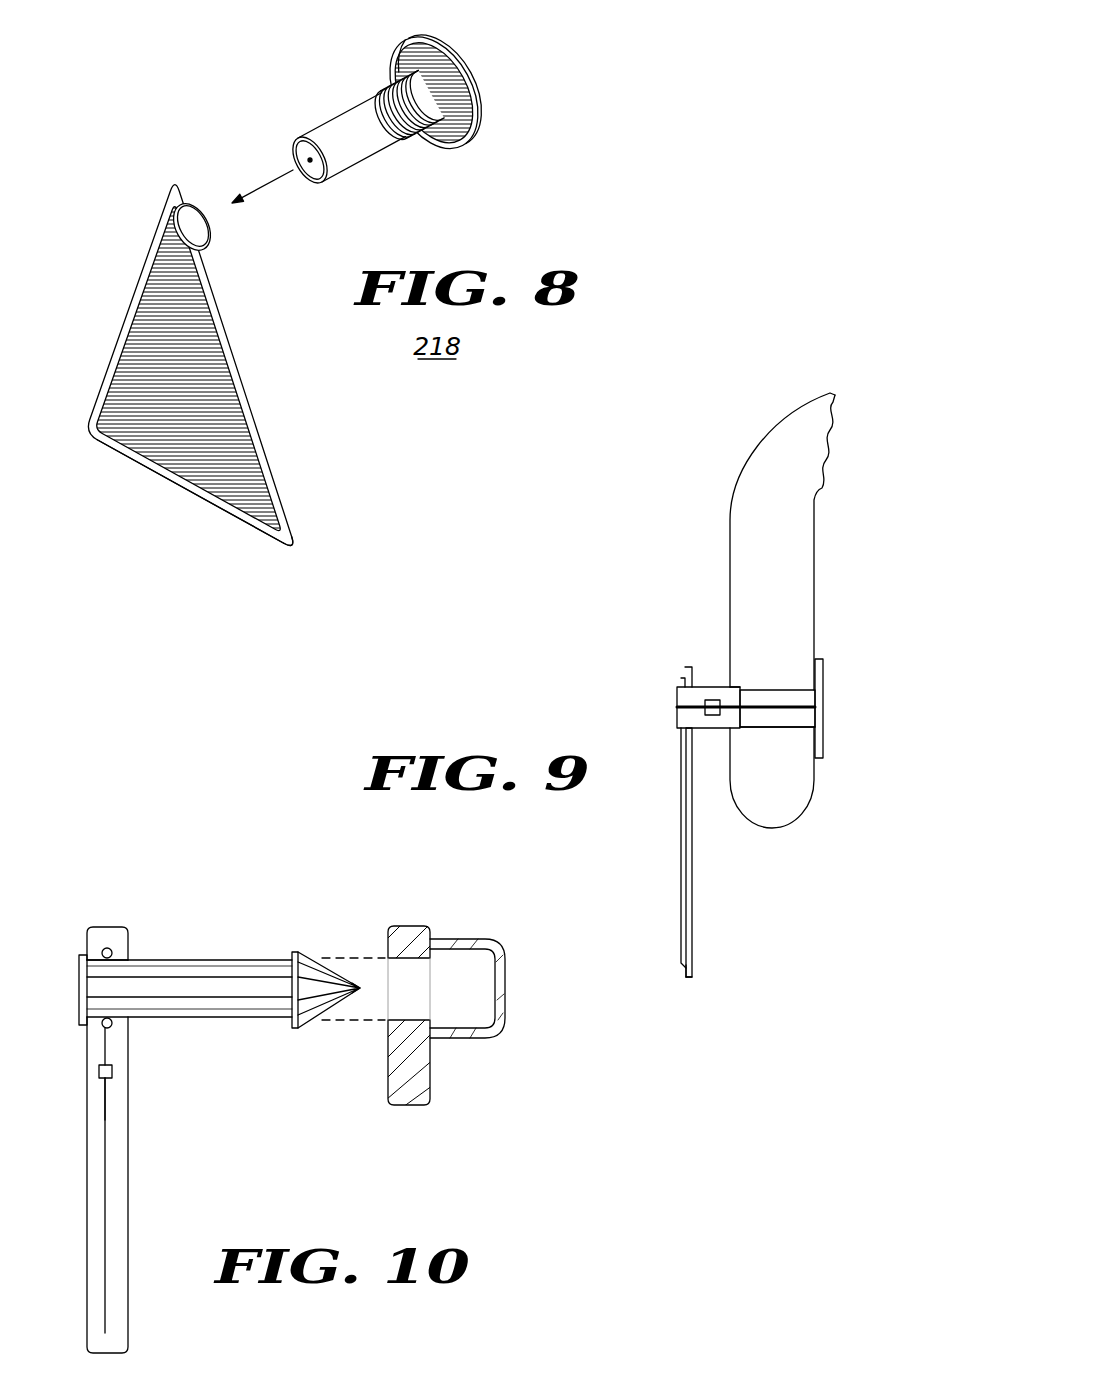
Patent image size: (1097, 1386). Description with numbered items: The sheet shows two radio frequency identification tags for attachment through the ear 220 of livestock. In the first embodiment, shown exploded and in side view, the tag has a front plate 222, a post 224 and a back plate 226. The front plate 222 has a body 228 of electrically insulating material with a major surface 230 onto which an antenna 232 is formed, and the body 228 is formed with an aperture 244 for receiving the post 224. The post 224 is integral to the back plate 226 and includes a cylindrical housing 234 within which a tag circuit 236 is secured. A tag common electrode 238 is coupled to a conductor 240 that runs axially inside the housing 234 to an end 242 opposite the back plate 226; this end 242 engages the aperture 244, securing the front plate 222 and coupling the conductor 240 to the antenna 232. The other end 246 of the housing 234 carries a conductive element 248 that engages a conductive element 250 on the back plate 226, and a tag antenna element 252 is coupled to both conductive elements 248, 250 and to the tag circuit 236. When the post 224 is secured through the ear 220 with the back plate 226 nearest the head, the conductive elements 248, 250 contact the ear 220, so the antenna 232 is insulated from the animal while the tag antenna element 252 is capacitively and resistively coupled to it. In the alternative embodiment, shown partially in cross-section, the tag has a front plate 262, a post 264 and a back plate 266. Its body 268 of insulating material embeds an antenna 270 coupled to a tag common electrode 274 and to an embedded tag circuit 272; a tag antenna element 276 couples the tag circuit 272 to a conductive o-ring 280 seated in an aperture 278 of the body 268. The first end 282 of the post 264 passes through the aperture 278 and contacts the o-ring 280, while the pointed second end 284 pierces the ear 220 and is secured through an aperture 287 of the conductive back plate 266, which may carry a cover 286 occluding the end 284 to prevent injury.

In FIG. 9, the ear 220 is at (770, 830).
In FIG. 8, the front plate 222 is at (192, 367).
In FIG. 9, the front plate 222 is at (656, 874).
In FIG. 8, the post 224 is at (394, 125).
In FIG. 8, the back plate 226 is at (477, 146).
In FIG. 9, the back plate 226 is at (835, 770).
In FIG. 8, the body 228 is at (293, 548).
In FIG. 9, the body 228 is at (690, 977).
In FIG. 8, the major surface 230 is at (187, 490).
In FIG. 9, the major surface 230 is at (680, 965).
In FIG. 8, the antenna 232 is at (240, 387).
In FIG. 9, the antenna 232 is at (680, 798).
In FIG. 8, the cylindrical housing 234 is at (310, 159).
In FIG. 9, the cylindrical housing 234 is at (728, 687).
In FIG. 9, the tag circuit 236 is at (710, 700).
In FIG. 9, the tag common electrode 238 is at (752, 730).
In FIG. 8, the conductor 240 is at (310, 162).
In FIG. 9, the conductor 240 is at (677, 718).
In FIG. 8, the end 242 is at (346, 141).
In FIG. 9, the end 242 is at (708, 671).
In FIG. 8, the aperture 244 is at (185, 210).
In FIG. 8, the end 246 is at (428, 72).
In FIG. 8, the conductive element 248 is at (405, 107).
In FIG. 8, the conductive element 250 is at (400, 50).
In FIG. 9, the tag antenna element 252 is at (745, 693).
In FIG. 10, the front plate 262 is at (270, 1121).
In FIG. 10, the post 264 is at (189, 963).
In FIG. 10, the back plate 266 is at (391, 1018).
In FIG. 10, the body 268 is at (130, 1332).
In FIG. 10, the antenna 270 is at (105, 1205).
In FIG. 10, the tag circuit 272 is at (115, 1071).
In FIG. 10, the tag common electrode 274 is at (110, 1087).
In FIG. 10, the tag antenna element 276 is at (110, 1057).
In FIG. 10, the aperture 278 is at (128, 960).
In FIG. 10, the conductive o-ring 280 is at (107, 948).
In FIG. 10, the first end 282 is at (63, 959).
In FIG. 10, the second end 284 is at (285, 1044).
In FIG. 10, the cover 286 is at (357, 987).
In FIG. 10, the aperture 287 is at (417, 990).